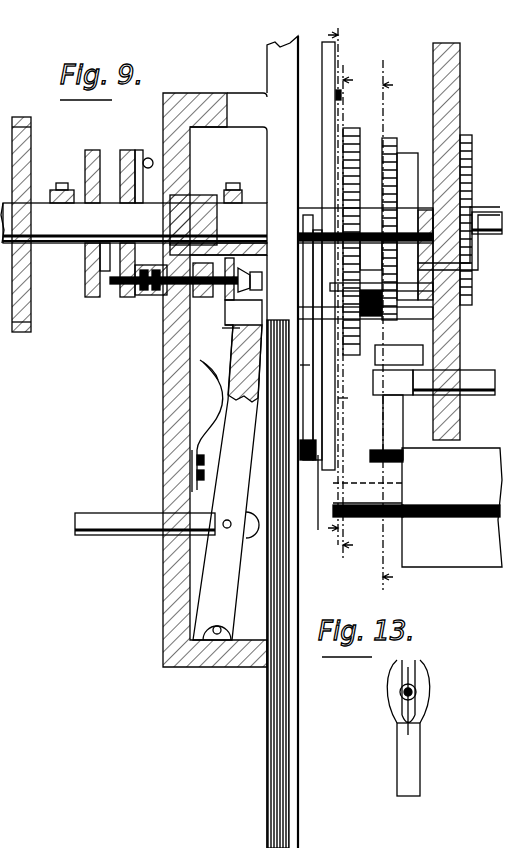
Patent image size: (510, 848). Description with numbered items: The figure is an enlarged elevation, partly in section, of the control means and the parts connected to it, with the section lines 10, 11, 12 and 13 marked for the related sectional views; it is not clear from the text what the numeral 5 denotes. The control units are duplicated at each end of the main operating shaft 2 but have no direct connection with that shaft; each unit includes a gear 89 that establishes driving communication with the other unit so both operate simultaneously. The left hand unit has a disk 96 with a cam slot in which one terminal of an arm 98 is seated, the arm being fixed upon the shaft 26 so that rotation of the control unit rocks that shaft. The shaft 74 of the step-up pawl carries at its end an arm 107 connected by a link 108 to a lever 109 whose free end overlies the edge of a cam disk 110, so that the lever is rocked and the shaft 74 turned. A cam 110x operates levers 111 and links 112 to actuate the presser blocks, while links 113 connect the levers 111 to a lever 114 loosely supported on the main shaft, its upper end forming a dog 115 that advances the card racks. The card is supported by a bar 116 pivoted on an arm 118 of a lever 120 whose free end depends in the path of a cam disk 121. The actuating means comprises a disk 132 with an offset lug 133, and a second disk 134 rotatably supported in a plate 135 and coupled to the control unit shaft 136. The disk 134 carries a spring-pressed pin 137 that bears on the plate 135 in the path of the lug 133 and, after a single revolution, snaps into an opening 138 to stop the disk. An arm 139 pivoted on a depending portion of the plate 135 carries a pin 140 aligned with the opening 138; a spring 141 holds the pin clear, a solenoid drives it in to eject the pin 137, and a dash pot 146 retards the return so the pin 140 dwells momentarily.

In FIG. 9, the main operating shaft 2 is at (478, 208).
In FIG. 9, the plate 5 is at (0, 405).
In FIG. 9, the section line 10— 10 is at (390, 320).
In FIG. 9, the section line 11— 11 is at (357, 311).
In FIG. 9, the section line 12— 12 is at (342, 286).
In FIG. 9, the section line 13— 13 is at (221, 328).
In FIG. 9, the shaft 26 is at (502, 245).
In FIG. 9, the shaft of the step-up pawl 74 is at (470, 378).
In FIG. 9, the gear 89 is at (355, 229).
In FIG. 9, the disk 96 is at (408, 153).
In FIG. 9, the arm 98 is at (447, 268).
In FIG. 9, the arm 107 is at (388, 430).
In FIG. 9, the link 108 is at (340, 486).
In FIG. 9, the lever 109 is at (378, 345).
In FIG. 9, the cam disk 110 is at (362, 138).
In FIG. 9, the cam 110x is at (308, 142).
In FIG. 9, the lever 111 is at (310, 448).
In FIG. 9, the link 112 is at (322, 470).
In FIG. 9, the link 113 is at (321, 504).
In FIG. 9, the lever 114 is at (310, 372).
In FIG. 9, the dog 115 is at (338, 102).
In FIG. 9, the bar 116 is at (454, 562).
In FIG. 9, the arm 118 is at (340, 502).
In FIG. 9, the lever 120 is at (356, 397).
In FIG. 9, the cam disk 121 is at (335, 172).
In FIG. 9, the disk 132 is at (92, 297).
In FIG. 9, the offset lug 133 is at (101, 272).
In FIG. 9, the second disk 134 is at (129, 150).
In FIG. 9, the plate 135 is at (165, 368).
In FIG. 9, the control unit shaft 136 is at (232, 196).
In FIG. 9, the spring-pressed pin 137 is at (118, 285).
In FIG. 9, the opening 138 is at (142, 176).
In FIG. 9, the arm 139 is at (227, 470).
In FIG. 13, the arm 139 is at (438, 750).
In FIG. 9, the pin 140 is at (226, 288).
In FIG. 13, the pin 140 is at (418, 692).
In FIG. 9, the spring 141 is at (215, 432).
In FIG. 9, the dash pot 146 is at (232, 363).